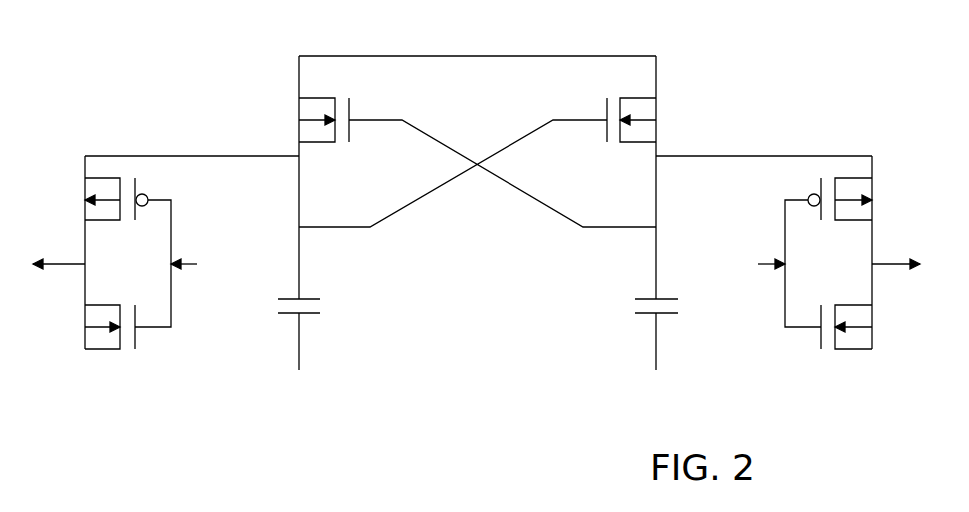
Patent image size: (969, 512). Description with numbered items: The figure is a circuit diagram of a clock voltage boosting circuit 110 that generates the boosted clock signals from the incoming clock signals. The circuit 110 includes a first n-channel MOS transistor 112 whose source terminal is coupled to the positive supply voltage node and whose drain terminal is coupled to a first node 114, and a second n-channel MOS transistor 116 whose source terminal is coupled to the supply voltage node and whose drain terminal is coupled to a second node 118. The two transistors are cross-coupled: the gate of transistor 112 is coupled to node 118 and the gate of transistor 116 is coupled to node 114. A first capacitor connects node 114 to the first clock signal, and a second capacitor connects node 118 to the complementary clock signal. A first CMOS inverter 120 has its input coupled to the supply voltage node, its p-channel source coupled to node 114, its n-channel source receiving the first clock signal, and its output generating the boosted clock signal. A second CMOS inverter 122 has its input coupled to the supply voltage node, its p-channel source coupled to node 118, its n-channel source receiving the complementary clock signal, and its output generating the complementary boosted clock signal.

The clock voltage boosting circuit 110 is at (476, 234).
The n-channel MOS transistor 112 is at (299, 110).
The node 114 is at (300, 234).
The n-channel MOS transistor 116 is at (660, 109).
The node 118 is at (656, 233).
The CMOS inverter 120 is at (157, 337).
The CMOS inverter 122 is at (803, 340).